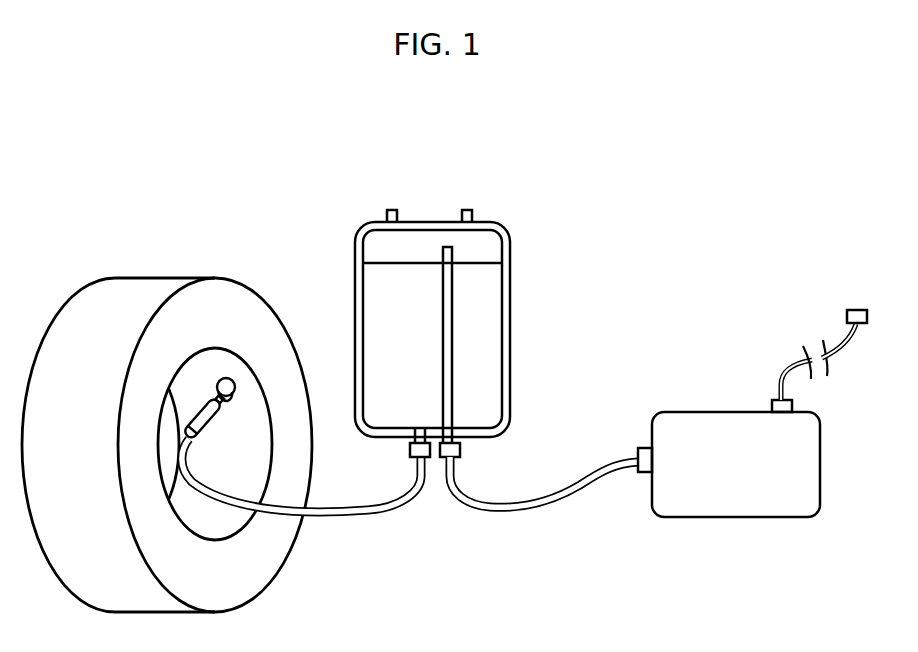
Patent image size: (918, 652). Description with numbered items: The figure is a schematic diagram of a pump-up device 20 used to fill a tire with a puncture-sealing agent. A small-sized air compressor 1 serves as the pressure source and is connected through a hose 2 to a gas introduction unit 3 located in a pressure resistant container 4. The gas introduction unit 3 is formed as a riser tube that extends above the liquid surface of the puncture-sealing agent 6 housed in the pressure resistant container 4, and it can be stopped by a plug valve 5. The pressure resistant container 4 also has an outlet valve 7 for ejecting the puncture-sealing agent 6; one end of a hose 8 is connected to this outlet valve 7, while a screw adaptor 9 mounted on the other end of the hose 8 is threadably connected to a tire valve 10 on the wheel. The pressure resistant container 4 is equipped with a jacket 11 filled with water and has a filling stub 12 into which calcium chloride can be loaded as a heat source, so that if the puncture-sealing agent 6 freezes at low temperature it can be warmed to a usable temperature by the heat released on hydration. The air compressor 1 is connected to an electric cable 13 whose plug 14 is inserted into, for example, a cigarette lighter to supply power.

The air compressor 1 is at (695, 425).
The hose 2 is at (543, 498).
The gas introduction unit 3 is at (452, 345).
The pressure resistant container 4 is at (527, 413).
The plug valve 5 is at (460, 452).
The puncture-sealing agent 6 is at (490, 292).
The outlet valve 7 is at (410, 452).
The hose 8 is at (343, 517).
The screw adaptor 9 is at (193, 402).
The tire valve 10 is at (221, 383).
The jacket 11 is at (508, 315).
The filling stub 12 is at (391, 207).
The electric cable 13 is at (783, 367).
The plug 14 is at (847, 312).
The pump-up device 20 is at (665, 198).